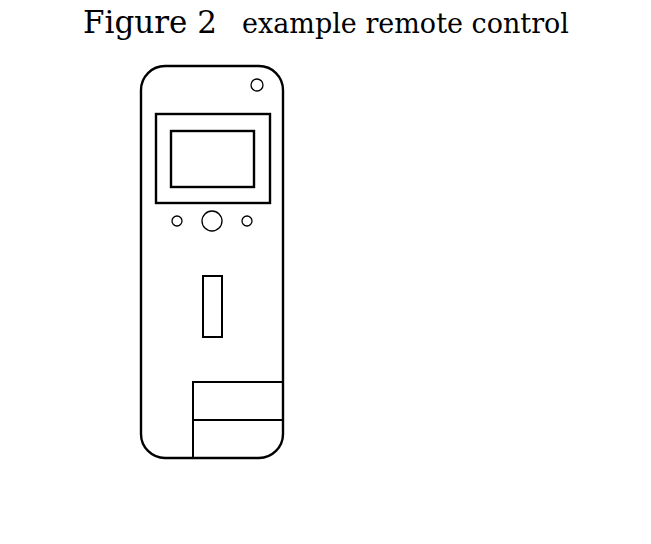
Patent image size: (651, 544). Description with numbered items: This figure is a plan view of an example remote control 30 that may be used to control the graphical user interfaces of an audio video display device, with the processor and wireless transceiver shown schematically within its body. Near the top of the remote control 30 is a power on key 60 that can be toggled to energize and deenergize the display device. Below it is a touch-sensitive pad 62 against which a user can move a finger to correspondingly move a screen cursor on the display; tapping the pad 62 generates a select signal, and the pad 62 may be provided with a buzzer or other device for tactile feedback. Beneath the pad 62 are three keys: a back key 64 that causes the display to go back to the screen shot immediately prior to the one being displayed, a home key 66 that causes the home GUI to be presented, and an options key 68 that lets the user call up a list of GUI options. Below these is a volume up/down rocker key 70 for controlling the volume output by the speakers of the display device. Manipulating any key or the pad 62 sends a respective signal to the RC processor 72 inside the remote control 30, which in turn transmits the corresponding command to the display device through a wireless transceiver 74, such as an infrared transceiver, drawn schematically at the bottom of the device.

The remote control 30 is at (105, 158).
The power on key 60 is at (263, 83).
The touch-sensitive pad 62 is at (250, 160).
The back key 64 is at (172, 222).
The home key 66 is at (203, 227).
The options key 68 is at (253, 221).
The volume up/down rocker key 70 is at (222, 299).
The RC processor 72 is at (284, 402).
The wireless transceiver 74 is at (284, 428).